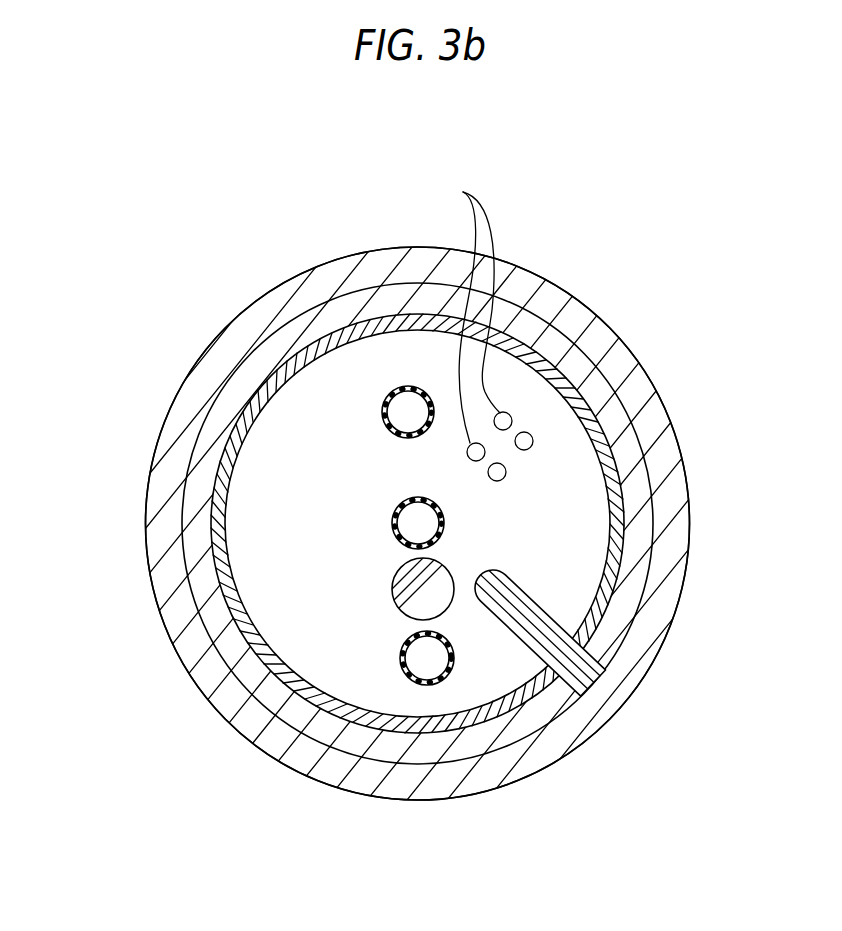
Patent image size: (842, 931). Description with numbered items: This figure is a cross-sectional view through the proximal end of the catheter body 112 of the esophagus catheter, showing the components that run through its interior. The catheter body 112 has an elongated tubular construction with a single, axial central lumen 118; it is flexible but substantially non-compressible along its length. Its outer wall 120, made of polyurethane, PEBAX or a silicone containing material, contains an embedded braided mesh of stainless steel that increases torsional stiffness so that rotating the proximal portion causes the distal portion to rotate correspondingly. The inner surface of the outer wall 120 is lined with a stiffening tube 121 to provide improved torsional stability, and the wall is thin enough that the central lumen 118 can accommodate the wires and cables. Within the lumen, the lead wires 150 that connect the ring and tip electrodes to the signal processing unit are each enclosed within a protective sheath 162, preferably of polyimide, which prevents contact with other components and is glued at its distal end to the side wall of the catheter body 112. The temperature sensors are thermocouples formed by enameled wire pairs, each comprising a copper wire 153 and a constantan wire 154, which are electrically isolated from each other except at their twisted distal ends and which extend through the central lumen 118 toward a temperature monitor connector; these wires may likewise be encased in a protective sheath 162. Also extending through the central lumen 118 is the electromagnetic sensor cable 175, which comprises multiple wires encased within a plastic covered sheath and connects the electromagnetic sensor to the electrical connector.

The catheter body 112 is at (632, 256).
The central lumen 118 is at (573, 578).
The outer wall 120 is at (563, 348).
The stiffening tube 121 is at (583, 407).
The lead wire 150 is at (407, 522).
The copper wire 153 is at (506, 471).
The constantan wire 154 is at (463, 192).
The protective sheath 162 is at (389, 396).
The electromagnetic sensor cable 175 is at (410, 597).